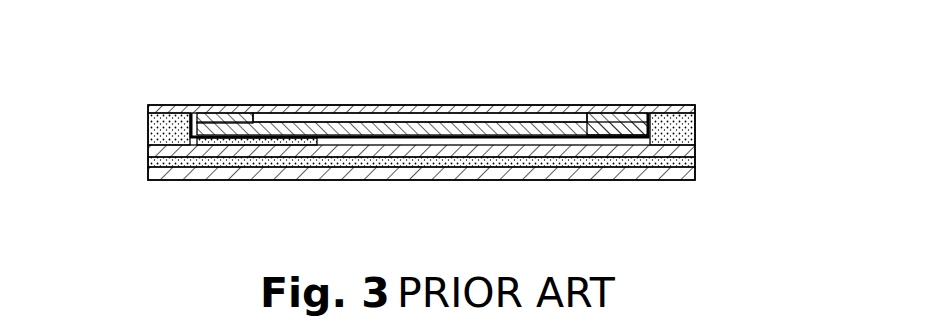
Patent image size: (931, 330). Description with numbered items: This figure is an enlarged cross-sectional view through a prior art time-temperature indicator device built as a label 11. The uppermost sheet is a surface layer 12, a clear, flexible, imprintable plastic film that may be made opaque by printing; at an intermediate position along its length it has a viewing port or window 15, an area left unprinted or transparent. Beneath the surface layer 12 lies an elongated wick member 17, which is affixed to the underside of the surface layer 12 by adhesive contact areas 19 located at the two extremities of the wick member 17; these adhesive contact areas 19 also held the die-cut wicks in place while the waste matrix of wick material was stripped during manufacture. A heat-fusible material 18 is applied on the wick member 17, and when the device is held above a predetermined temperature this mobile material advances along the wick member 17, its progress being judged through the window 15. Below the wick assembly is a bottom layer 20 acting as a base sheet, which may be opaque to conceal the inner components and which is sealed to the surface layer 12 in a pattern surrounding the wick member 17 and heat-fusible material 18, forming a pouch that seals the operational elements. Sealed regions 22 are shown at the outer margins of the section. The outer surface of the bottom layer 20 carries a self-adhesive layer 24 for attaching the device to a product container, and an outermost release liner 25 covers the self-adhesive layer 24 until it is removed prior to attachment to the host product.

The label 11 is at (130, 143).
The surface layer 12 is at (547, 111).
The viewing port or window 15 is at (445, 111).
The wick member 17 is at (350, 127).
The heat-fusible material 18 is at (248, 144).
The adhesive contact areas 19 is at (228, 118).
The bottom layer 20 is at (523, 150).
The encapsulant fill 22 is at (160, 128).
The self-adhesive layer 24 is at (647, 160).
The release liner 25 is at (188, 163).